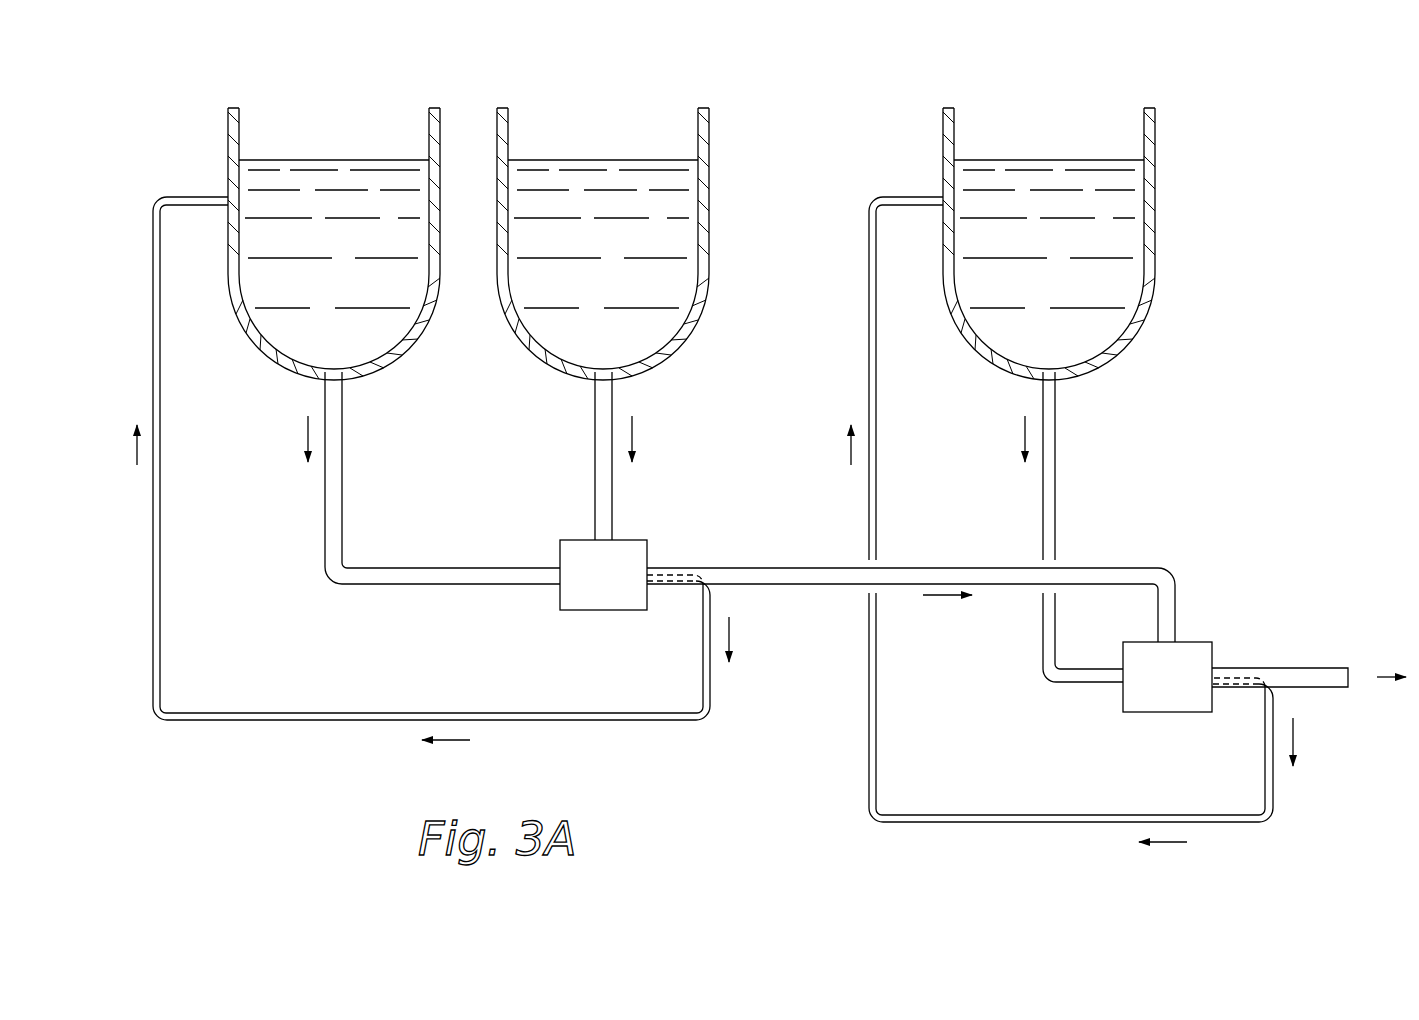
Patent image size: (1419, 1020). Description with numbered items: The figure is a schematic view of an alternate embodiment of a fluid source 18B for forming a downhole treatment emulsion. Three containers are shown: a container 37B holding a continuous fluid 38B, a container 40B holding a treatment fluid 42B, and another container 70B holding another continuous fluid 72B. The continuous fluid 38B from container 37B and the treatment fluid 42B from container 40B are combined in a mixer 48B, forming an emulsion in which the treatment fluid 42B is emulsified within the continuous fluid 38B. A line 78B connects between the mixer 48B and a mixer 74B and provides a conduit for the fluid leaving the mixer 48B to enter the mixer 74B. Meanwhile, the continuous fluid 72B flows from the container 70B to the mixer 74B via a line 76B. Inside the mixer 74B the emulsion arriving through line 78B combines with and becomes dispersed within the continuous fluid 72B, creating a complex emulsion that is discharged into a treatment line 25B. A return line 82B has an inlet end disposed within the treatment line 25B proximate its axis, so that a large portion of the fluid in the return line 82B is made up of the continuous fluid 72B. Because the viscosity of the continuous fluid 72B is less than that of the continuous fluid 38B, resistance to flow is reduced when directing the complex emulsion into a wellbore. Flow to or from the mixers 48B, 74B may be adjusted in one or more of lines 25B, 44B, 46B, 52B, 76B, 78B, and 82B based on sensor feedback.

The fluid source 18B is at (160, 79).
The container 37B is at (228, 133).
The continuous fluid 38B is at (330, 160).
The container 40B is at (710, 132).
The treatment fluid 42B is at (597, 160).
The line 44B is at (325, 503).
The line 46B is at (612, 500).
The mixer 48B is at (602, 612).
The line 52B is at (153, 572).
The line 78B is at (800, 567).
The container 70B is at (943, 133).
The continuous fluid 72B is at (1048, 160).
The line 76B is at (1043, 505).
The mixer 74B is at (1165, 715).
The return line 82B is at (869, 672).
The treatment line 25B is at (1302, 668).